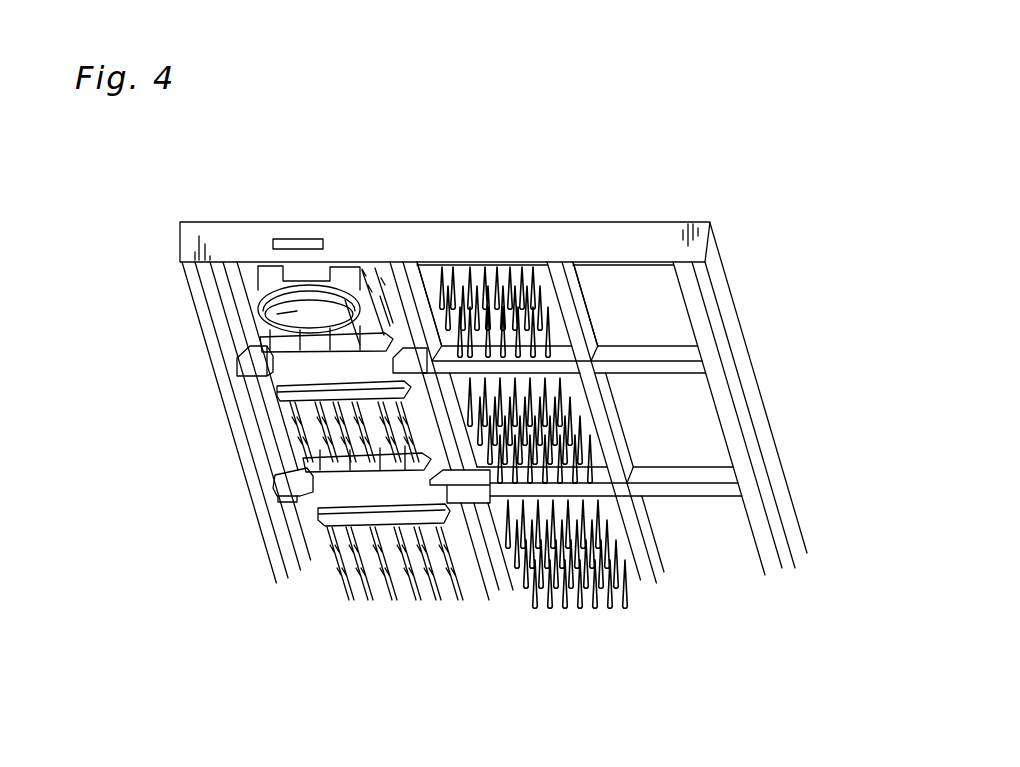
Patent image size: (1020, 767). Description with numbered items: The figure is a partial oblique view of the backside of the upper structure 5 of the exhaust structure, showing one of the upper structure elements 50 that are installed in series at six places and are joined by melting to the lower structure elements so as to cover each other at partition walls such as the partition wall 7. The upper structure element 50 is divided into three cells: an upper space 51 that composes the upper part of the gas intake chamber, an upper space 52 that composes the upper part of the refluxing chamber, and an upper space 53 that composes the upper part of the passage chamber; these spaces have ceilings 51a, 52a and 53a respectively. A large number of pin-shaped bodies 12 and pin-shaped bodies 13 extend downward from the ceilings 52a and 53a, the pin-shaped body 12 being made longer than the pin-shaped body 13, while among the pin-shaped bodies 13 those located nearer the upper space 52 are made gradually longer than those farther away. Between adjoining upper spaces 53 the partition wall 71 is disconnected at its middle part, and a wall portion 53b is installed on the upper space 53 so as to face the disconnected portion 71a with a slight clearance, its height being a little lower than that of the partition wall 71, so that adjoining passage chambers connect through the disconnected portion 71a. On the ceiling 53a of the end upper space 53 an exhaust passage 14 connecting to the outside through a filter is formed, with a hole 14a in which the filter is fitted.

The upper structure 5 is at (438, 210).
The partition wall 7 is at (735, 408).
The pin-shaped body 12 is at (622, 583).
The pin-shaped body 13 is at (458, 580).
The exhaust passage 14 is at (263, 289).
The hole 14a is at (290, 313).
The upper structure element 50 is at (515, 411).
The upper space 51 is at (640, 303).
The ceiling 51a is at (657, 283).
The upper space 52 is at (547, 293).
The ceiling 52a is at (431, 283).
The upper space 53 is at (385, 292).
The ceiling 53a is at (240, 283).
The wall portion 53b is at (343, 455).
The partition wall 71 is at (292, 502).
The disconnected portion 71a is at (337, 488).